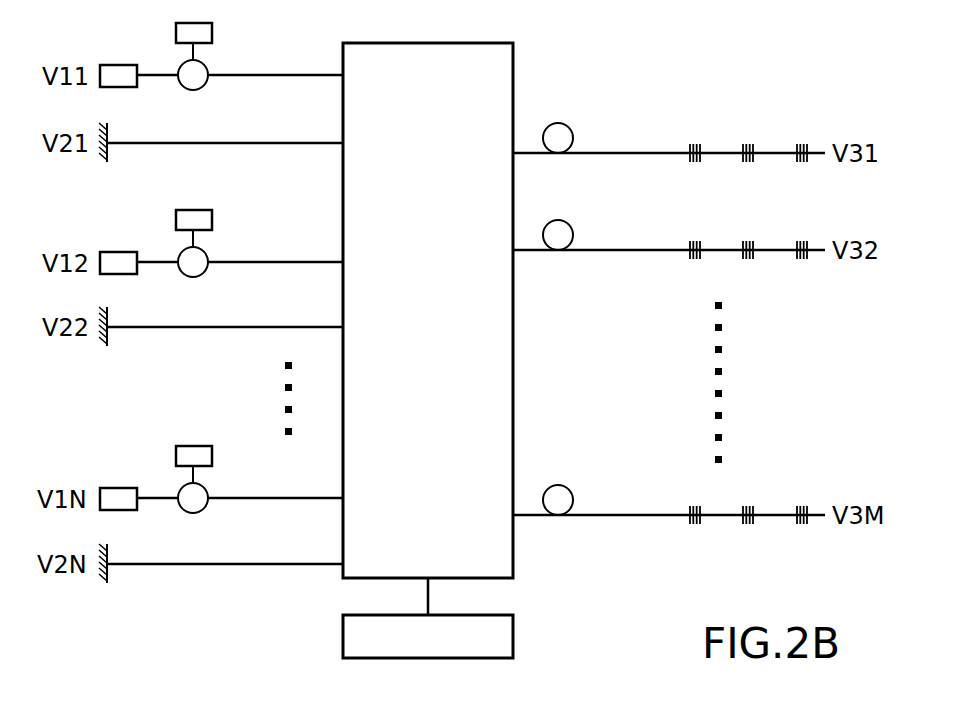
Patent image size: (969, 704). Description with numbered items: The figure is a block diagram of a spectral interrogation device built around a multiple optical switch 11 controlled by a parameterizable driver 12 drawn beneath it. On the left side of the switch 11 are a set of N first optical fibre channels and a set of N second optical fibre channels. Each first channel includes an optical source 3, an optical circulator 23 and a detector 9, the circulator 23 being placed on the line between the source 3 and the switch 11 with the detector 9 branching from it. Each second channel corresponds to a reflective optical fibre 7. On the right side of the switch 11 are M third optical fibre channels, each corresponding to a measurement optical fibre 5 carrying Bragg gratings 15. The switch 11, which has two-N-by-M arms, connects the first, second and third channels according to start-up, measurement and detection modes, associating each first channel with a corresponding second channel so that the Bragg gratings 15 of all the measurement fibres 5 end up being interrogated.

The optical source 3 is at (108, 64).
The detector 9 is at (212, 34).
The optical circulator 23 is at (199, 80).
The reflective optical fibre 7 is at (160, 153).
The measurement optical fibre 5 is at (613, 163).
The Bragg grating 15 is at (748, 142).
The multiple optical switch 11 is at (503, 560).
The parameterizable driver 12 is at (503, 638).